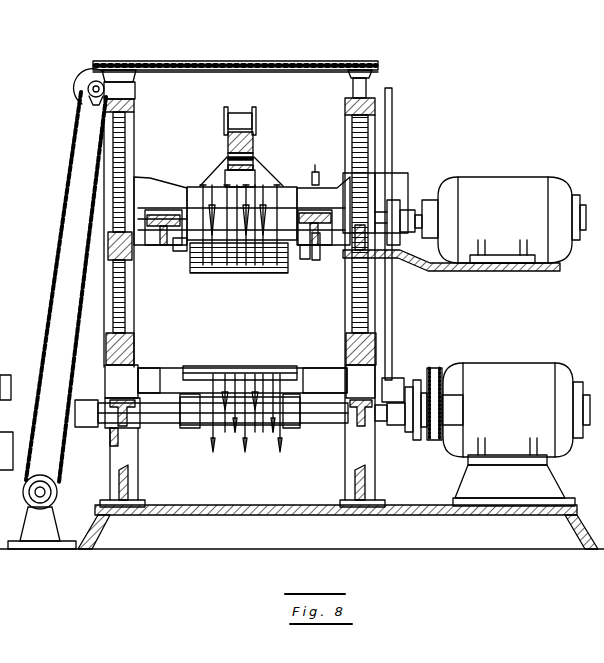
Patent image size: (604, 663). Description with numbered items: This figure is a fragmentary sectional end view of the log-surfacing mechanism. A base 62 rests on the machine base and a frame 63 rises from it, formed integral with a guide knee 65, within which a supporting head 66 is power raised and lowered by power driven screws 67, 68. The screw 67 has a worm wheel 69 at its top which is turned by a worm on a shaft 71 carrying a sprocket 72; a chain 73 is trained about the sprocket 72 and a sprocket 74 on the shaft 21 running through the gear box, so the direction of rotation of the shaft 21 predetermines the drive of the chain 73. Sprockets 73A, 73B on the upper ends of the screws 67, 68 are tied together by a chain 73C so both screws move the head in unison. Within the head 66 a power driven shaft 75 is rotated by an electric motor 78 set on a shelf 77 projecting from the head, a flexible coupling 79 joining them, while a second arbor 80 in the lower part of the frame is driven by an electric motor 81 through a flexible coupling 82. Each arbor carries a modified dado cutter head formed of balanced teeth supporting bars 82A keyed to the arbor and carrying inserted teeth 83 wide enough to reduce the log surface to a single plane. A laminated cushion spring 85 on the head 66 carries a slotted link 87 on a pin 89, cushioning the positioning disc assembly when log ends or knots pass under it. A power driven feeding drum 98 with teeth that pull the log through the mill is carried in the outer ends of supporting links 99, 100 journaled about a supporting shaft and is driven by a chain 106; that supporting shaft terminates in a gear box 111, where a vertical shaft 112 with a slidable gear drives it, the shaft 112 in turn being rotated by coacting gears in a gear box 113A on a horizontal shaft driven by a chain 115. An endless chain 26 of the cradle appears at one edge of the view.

The shaft 21 is at (58, 498).
The endless chain 26 is at (4, 358).
The base 62 is at (195, 508).
The frame 63 is at (128, 464).
The guide knee 65 is at (138, 300).
The supporting head 66 is at (165, 195).
The power driven screw 67 is at (128, 158).
The power driven screw 68 is at (363, 150).
The worm wheel 69 is at (138, 96).
The shaft 71 is at (90, 98).
The sprocket 72 is at (84, 68).
The chain 73 is at (62, 205).
The sprocket 73A is at (138, 66).
The sprocket 73B is at (380, 66).
The chain 73C is at (243, 62).
The sprocket 74 is at (58, 484).
The power driven shaft 75 is at (317, 262).
The shelf 77 is at (462, 272).
The electric motor 78 is at (485, 182).
The flexible coupling 79 is at (400, 207).
The second arbor 80 is at (332, 418).
The electric motor 81 is at (495, 367).
The flexible coupling 82 is at (428, 432).
The balanced teeth supporting bars 82A is at (248, 452).
The inserted teeth 83 is at (214, 452).
The cushion spring 85 is at (256, 140).
The link 87 is at (262, 172).
The pin 89 is at (256, 118).
The power driven feeding drum 98 is at (255, 274).
The supporting link 99 is at (303, 262).
The supporting link 100 is at (177, 251).
The chain 106 is at (316, 170).
The gear box 111 is at (400, 172).
The shaft 112 is at (393, 340).
The gear box 113A is at (393, 378).
The chain 115 is at (418, 382).